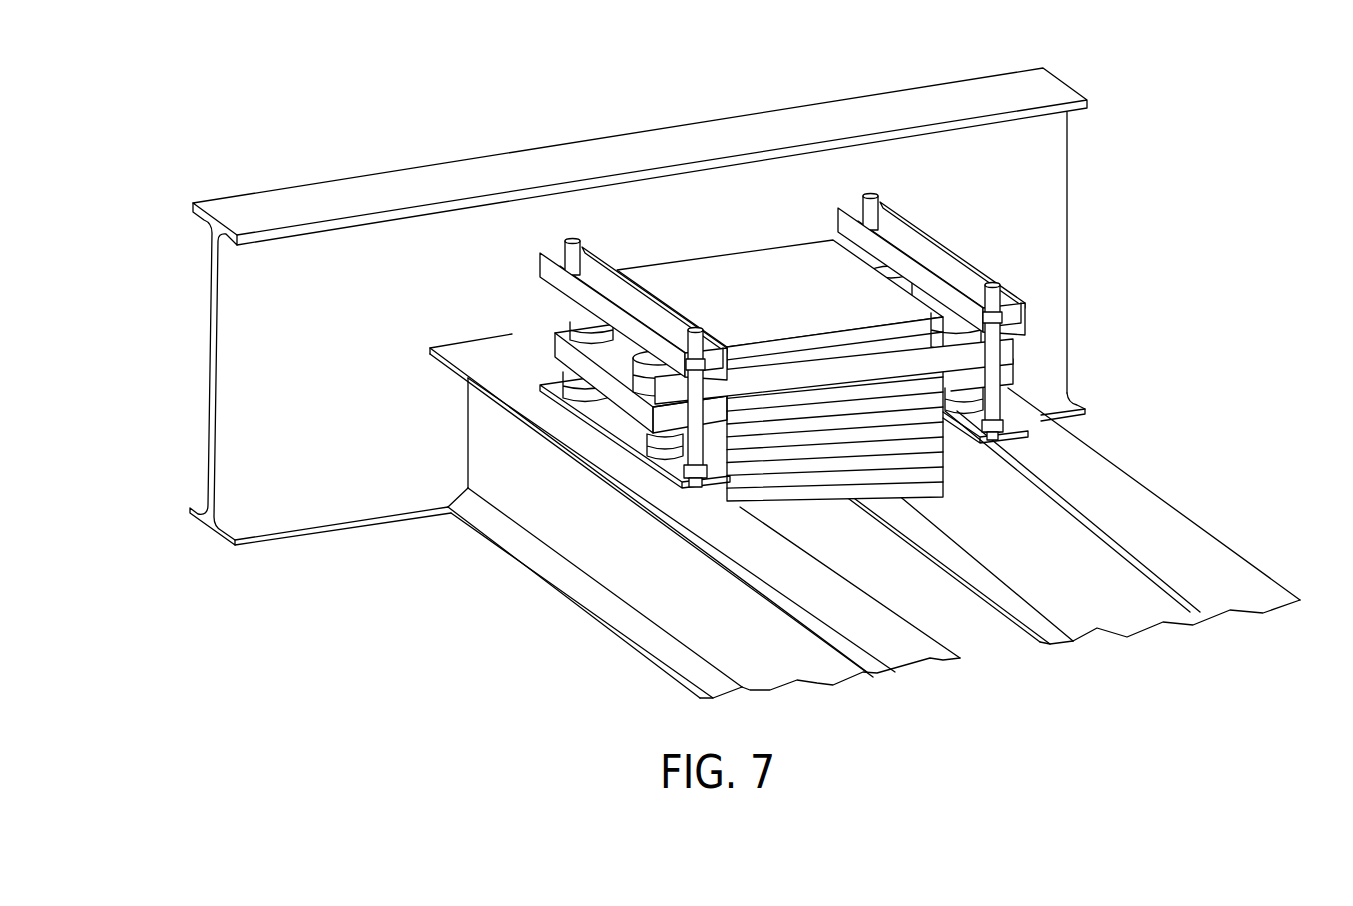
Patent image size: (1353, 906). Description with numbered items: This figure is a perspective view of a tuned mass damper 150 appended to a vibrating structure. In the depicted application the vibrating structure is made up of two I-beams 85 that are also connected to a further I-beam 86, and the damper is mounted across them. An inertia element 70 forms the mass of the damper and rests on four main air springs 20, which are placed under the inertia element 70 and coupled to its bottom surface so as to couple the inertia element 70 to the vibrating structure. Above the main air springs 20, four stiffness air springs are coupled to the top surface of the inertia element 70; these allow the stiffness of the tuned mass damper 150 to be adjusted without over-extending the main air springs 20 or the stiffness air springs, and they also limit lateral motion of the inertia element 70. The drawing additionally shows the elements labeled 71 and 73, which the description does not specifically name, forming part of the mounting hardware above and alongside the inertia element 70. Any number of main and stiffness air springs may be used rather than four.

The main air spring 20 is at (571, 381).
The inertia element 70 is at (747, 280).
The channel 71 is at (925, 231).
The tie bar 73 is at (996, 372).
The I-beam 85 is at (836, 593).
The I-beam 86 is at (212, 401).
The tuned mass damper 150 is at (492, 282).